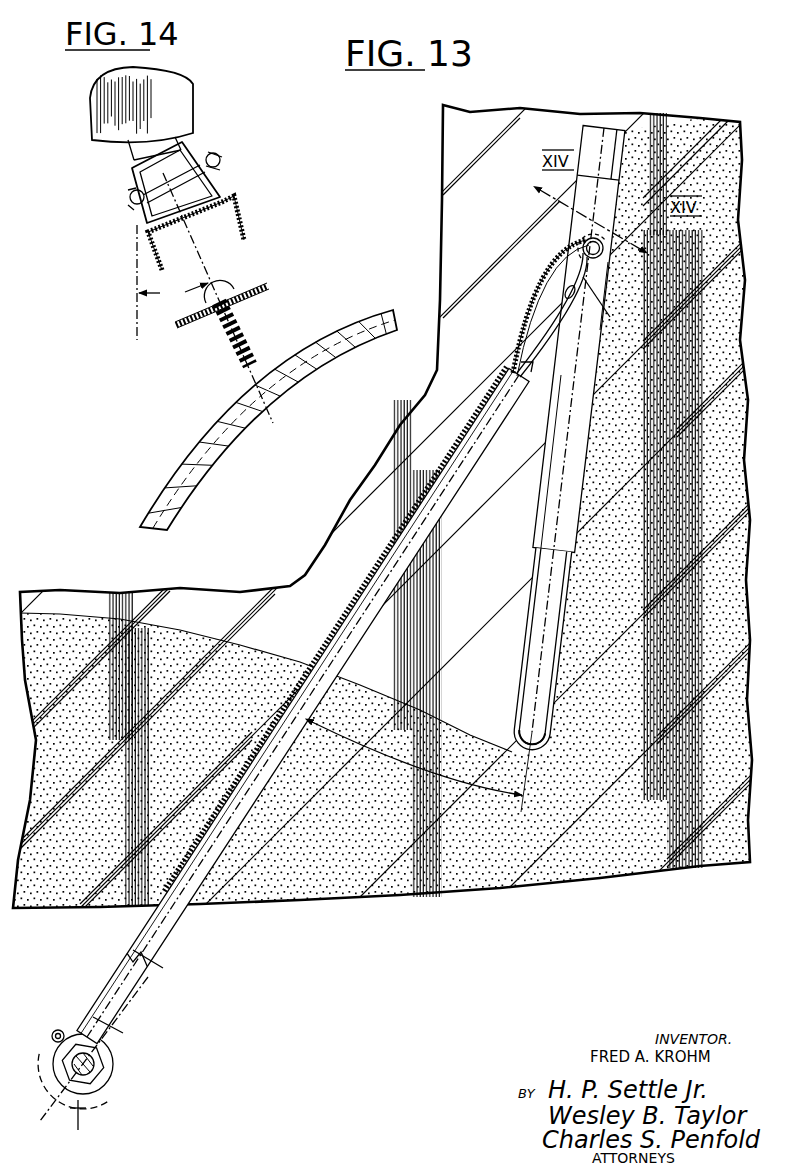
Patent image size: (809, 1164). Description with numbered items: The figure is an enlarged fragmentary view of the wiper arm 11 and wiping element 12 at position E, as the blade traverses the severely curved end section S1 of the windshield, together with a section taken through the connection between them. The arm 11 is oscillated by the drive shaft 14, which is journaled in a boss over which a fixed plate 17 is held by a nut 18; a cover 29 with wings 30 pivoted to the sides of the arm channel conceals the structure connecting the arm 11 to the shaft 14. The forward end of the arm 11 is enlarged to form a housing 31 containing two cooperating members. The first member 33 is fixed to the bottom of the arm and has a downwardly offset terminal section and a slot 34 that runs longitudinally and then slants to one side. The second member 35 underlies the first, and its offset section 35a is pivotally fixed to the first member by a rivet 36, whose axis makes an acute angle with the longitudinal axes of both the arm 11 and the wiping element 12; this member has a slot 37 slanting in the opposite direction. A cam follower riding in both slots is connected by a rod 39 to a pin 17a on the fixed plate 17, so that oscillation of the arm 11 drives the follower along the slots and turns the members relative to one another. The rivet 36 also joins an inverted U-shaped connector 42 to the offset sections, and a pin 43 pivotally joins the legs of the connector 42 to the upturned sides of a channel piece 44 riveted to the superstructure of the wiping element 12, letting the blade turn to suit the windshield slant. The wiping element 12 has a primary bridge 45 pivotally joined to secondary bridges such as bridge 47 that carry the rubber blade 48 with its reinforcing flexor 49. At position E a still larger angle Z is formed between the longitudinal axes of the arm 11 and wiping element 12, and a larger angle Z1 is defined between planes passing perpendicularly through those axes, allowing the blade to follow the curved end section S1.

In FIG. 13, the arm 11 is at (325, 694).
In FIG. 13, the wiping element 12 is at (547, 519).
In FIG. 13, the drive shaft 14 is at (95, 1064).
In FIG. 13, the plate 17 is at (53, 1056).
In FIG. 13, the pin 17a is at (53, 1031).
In FIG. 13, the nut 18 is at (97, 1083).
In FIG. 13, the cover 29 is at (72, 1102).
In FIG. 13, the wings 30 is at (163, 983).
In FIG. 13, the housing 31 is at (545, 280).
In FIG. 14, the housing 31 is at (178, 92).
In FIG. 13, the first member 33 is at (530, 342).
In FIG. 13, the slot 34 is at (565, 300).
In FIG. 13, the second member 35 is at (579, 254).
In FIG. 14, the offset section 35a is at (122, 145).
In FIG. 13, the rivet 36 is at (584, 242).
In FIG. 13, the slot 37 is at (586, 284).
In FIG. 13, the rod 39 is at (531, 365).
In FIG. 14, the connector 42 is at (195, 145).
In FIG. 14, the pin 43 is at (220, 160).
In FIG. 13, the channel piece 44 is at (607, 284).
In FIG. 14, the channel piece 44 is at (130, 194).
In FIG. 13, the primary bridge 45 is at (556, 418).
In FIG. 14, the primary bridge 45 is at (244, 232).
In FIG. 13, the secondary bridge 47 is at (522, 676).
In FIG. 14, the rubber blade 48 is at (246, 325).
In FIG. 14, the flexor 49 is at (258, 283).
In FIG. 13, the curved end section S1 is at (465, 126).
In FIG. 14, the curved end section S1 is at (205, 422).
In FIG. 13, the position E is at (514, 311).
In FIG. 13, the angle Z is at (417, 758).
In FIG. 14, the angle Z1 is at (172, 282).